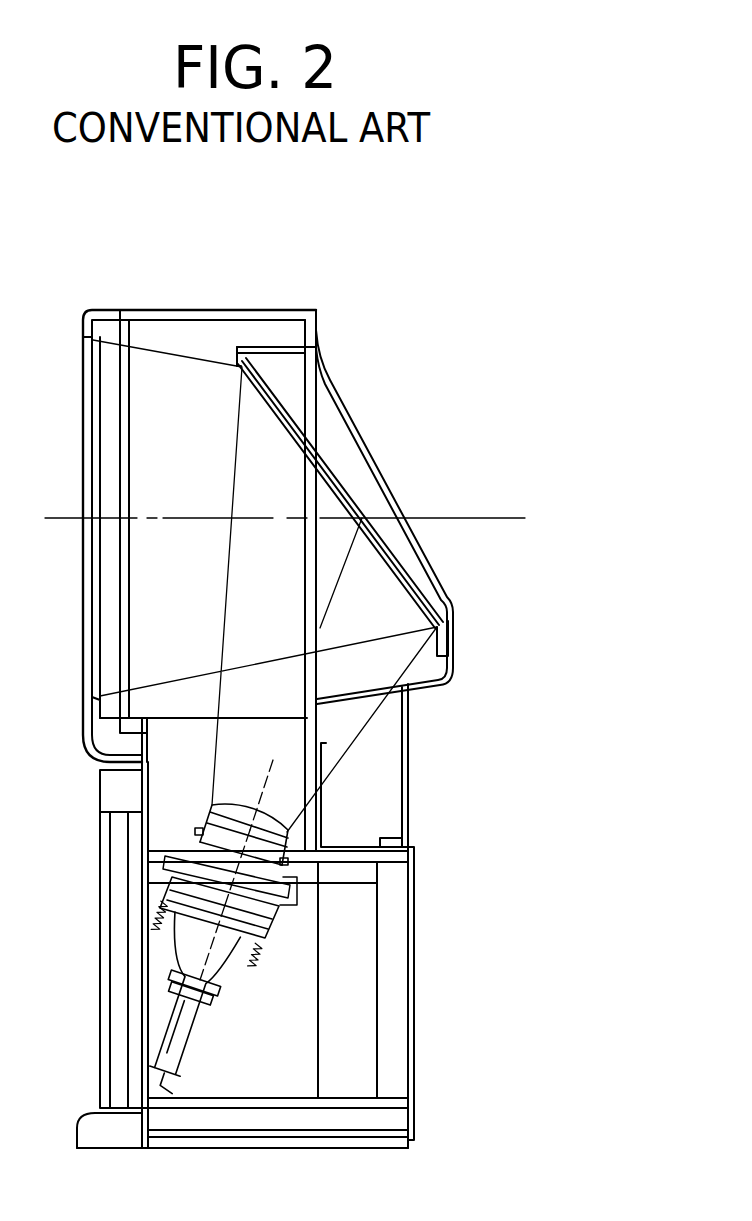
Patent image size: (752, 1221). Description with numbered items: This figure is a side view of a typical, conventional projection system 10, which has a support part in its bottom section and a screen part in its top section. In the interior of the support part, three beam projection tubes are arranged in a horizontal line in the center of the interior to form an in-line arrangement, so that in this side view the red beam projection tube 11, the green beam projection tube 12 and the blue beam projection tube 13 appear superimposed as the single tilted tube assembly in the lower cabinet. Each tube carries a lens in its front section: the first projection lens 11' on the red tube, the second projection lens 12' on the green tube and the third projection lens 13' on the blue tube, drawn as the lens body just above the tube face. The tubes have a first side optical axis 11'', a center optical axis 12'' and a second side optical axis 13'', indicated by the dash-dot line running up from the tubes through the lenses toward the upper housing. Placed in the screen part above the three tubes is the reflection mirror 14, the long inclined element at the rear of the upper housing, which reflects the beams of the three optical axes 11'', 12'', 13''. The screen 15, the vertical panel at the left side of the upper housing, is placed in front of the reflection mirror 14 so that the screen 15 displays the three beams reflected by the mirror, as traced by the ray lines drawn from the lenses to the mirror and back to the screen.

The projection system 10 is at (180, 303).
The reflection mirror 14 is at (308, 400).
The screen 15 is at (118, 404).
The red beam projection tube 11 is at (330, 979).
The green beam projection tube 12 is at (335, 885).
The blue beam projection tube 13 is at (362, 890).
The first projection lens 11' is at (390, 826).
The second projection lens 12' is at (362, 817).
The third projection lens 13' is at (392, 826).
The first side optical axis 11'' is at (397, 749).
The center optical axis 12'' is at (375, 813).
The second side optical axis 13'' is at (397, 851).